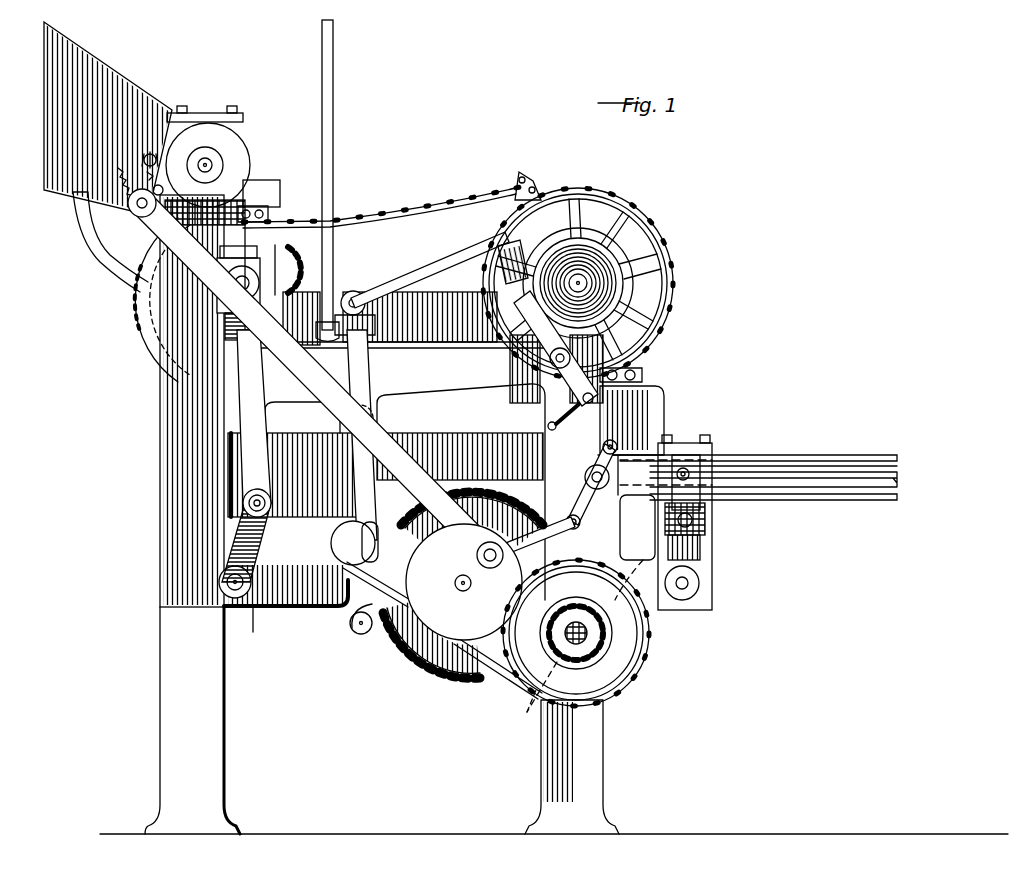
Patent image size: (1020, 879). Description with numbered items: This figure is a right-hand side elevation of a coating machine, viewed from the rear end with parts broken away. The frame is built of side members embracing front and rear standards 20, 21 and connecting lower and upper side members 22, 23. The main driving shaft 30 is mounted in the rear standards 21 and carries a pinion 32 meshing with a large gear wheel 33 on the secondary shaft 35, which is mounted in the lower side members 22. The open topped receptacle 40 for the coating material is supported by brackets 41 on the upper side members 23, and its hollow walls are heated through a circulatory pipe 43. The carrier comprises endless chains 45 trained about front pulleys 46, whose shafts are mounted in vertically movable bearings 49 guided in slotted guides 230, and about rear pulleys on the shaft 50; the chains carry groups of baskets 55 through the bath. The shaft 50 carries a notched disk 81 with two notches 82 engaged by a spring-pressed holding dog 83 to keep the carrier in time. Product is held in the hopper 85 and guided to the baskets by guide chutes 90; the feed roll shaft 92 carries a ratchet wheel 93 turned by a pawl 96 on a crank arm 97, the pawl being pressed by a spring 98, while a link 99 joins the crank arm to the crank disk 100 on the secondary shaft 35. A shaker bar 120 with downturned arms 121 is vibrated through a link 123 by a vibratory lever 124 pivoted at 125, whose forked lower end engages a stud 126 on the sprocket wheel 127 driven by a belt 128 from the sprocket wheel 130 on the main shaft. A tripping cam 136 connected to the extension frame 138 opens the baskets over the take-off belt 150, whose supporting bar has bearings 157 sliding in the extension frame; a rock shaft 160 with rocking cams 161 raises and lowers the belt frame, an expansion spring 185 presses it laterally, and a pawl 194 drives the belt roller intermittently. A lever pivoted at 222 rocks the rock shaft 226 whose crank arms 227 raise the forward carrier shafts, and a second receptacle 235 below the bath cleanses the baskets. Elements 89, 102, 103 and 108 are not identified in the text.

The front standards 20 is at (185, 586).
The rear standards 21 is at (592, 733).
The lower side members 22 is at (312, 608).
The upper side members 23 is at (490, 386).
The main driving shaft 30 is at (590, 636).
The pinion 32 is at (517, 717).
The large gear wheel 33 is at (432, 666).
The secondary shaft 35 is at (457, 589).
The receptacle 40 is at (395, 300).
The brackets 41 is at (430, 342).
The circulatory pipe 43 is at (334, 160).
The endless chains 45 is at (425, 212).
The front pulleys 46 is at (295, 264).
The bearings 49 is at (160, 300).
The shaft 50 is at (588, 283).
The group of baskets 55 is at (240, 440).
The notched disk 81 is at (622, 297).
The notches 82 is at (626, 260).
The holding dog 83 is at (610, 380).
The hopper 85 is at (95, 70).
The spring 89 is at (548, 426).
The guide chutes 90 is at (270, 185).
The shaft 92 is at (210, 160).
The ratchet wheel 93 is at (235, 140).
The pawl 96 is at (150, 160).
The crank arm 97 is at (163, 190).
The spring 98 is at (157, 150).
The link 99 is at (265, 410).
The crank disk 100 is at (445, 618).
The lever 102 is at (592, 480).
The connecting rod 103 is at (560, 530).
The discharge chute 108 is at (102, 252).
The shaker bar 120 is at (535, 200).
The downturned arms 121 is at (498, 240).
The link 123 is at (440, 268).
The vibratory lever 124 is at (368, 378).
The pivot 125 is at (373, 420).
The pin or stud 126 is at (350, 568).
The sprocket wheel 127 is at (332, 540).
The belt 128 is at (500, 686).
The sprocket wheel 130 is at (620, 660).
The tripping cam 136 is at (664, 392).
The extension frame 138 is at (712, 545).
The take-off belt 150 is at (868, 445).
The bearings 157 is at (700, 510).
The rock shaft 160 is at (688, 583).
The rocking cams 161 is at (594, 603).
The expansion spring 185 is at (560, 428).
The pawl 194 is at (660, 432).
The pivot 222 is at (358, 634).
The rock shaft 226 is at (225, 588).
The crank arms 227 is at (255, 632).
The slotted guides 230 is at (215, 360).
The second receptacle 235 is at (385, 467).